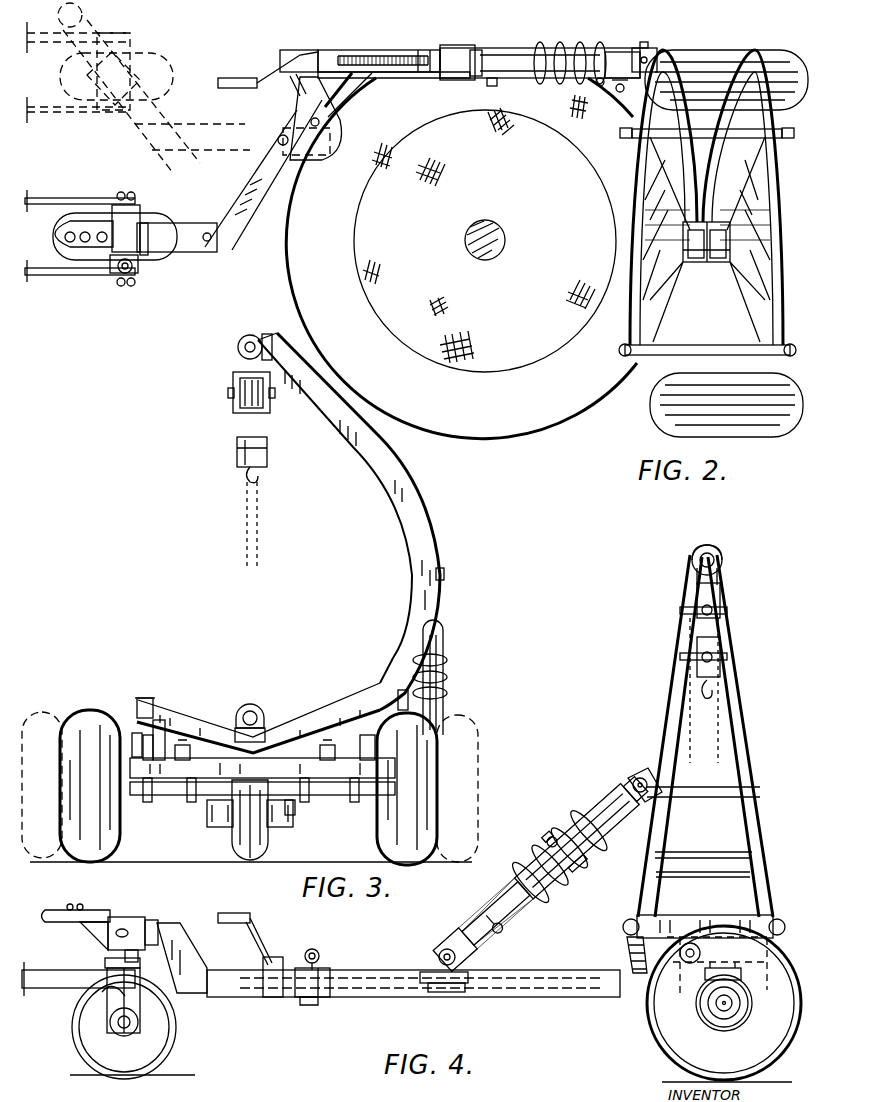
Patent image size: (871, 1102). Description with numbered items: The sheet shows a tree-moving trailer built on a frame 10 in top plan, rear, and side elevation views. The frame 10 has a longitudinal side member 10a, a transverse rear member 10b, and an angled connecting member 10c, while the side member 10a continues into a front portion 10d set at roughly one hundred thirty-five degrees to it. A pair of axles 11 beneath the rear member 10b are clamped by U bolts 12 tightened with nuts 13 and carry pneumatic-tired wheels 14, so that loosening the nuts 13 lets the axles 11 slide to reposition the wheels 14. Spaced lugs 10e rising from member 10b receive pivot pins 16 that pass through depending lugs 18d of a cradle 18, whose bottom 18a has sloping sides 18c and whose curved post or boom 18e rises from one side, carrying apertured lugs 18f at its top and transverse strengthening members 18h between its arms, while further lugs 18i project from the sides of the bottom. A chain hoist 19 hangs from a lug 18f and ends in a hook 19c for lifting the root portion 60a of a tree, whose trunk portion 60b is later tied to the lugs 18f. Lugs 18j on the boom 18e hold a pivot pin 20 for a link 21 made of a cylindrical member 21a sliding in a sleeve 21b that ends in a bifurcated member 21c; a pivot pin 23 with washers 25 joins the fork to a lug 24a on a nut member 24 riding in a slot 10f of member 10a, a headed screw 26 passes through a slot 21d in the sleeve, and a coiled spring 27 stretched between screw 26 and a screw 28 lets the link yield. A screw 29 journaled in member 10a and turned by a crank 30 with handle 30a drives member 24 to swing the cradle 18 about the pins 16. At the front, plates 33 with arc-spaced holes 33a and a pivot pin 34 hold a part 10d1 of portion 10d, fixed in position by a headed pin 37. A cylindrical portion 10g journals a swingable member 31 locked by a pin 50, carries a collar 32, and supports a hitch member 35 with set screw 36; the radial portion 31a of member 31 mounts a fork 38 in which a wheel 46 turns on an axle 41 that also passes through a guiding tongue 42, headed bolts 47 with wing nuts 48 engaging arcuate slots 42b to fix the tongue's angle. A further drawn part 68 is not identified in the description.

In FIG. 4, the frame 10 is at (226, 997).
In FIG. 2, the side member 10a is at (372, 44).
In FIG. 3, the rear member 10b is at (330, 758).
In FIG. 2, the connecting member 10c is at (618, 93).
In FIG. 2, the front portion 10d is at (350, 80).
In FIG. 2, the pivoted part of front portion 10d1 is at (243, 196).
In FIG. 3, the spaced lugs 10e is at (136, 733).
In FIG. 4, the spaced lugs 10e is at (630, 955).
In FIG. 2, the slot 10f is at (416, 52).
In FIG. 2, the cylindrical pivot portion 10g is at (188, 262).
In FIG. 4, the cylindrical pivot portion 10g is at (160, 923).
In FIG. 3, the axles 11 is at (160, 795).
In FIG. 4, the axles 11 is at (735, 1007).
In FIG. 3, the U bolts 12 is at (147, 802).
In FIG. 4, the U bolts 12 is at (753, 994).
In FIG. 3, the nuts 13 is at (182, 745).
In FIG. 2, the wheels 14 is at (780, 102).
In FIG. 3, the wheels 14 is at (58, 712).
In FIG. 4, the wheels 14 is at (662, 1007).
In FIG. 3, the pivot pins 16 is at (132, 735).
In FIG. 4, the pivot pins 16 is at (691, 943).
In FIG. 2, the cradle 18 is at (620, 226).
In FIG. 3, the cradle 18 is at (293, 707).
In FIG. 2, the cradle bottom 18a is at (645, 342).
In FIG. 2, the sloping sides 18c is at (650, 172).
In FIG. 3, the depending lugs 18d is at (160, 720).
In FIG. 4, the depending lugs 18d is at (703, 946).
In FIG. 2, the post or boom 18e is at (775, 290).
In FIG. 3, the post or boom 18e is at (441, 513).
In FIG. 4, the post or boom 18e is at (738, 730).
In FIG. 2, the apertured lugs 18f is at (731, 240).
In FIG. 3, the apertured lugs 18f is at (245, 345).
In FIG. 4, the apertured lugs 18f is at (745, 533).
In FIG. 4, the transverse strengthening members 18h is at (705, 858).
In FIG. 2, the side lugs 18i is at (627, 140).
In FIG. 3, the side lugs 18i is at (152, 697).
In FIG. 4, the side lugs 18i is at (622, 928).
In FIG. 4, the spaced lugs 18j is at (648, 772).
In FIG. 3, the chain hoist 19 is at (235, 405).
In FIG. 4, the chain hoist 19 is at (728, 612).
In FIG. 3, the hook 19c is at (262, 474).
In FIG. 4, the hook 19c is at (697, 688).
In FIG. 2, the pivot pin 20 is at (646, 50).
In FIG. 3, the pivot pin 20 is at (444, 573).
In FIG. 4, the pivot pin 20 is at (637, 782).
In FIG. 2, the link 21 is at (545, 87).
In FIG. 3, the link 21 is at (445, 710).
In FIG. 4, the link 21 is at (520, 855).
In FIG. 2, the link member 21a is at (606, 80).
In FIG. 4, the link member 21a is at (608, 814).
In FIG. 4, the cylindrical sleeve 21b is at (578, 838).
In FIG. 4, the bifurcated member 21c is at (463, 932).
In FIG. 4, the longitudinal slot 21d is at (576, 856).
In FIG. 2, the pivot pin 23 is at (498, 32).
In FIG. 4, the pivot pin 23 is at (438, 953).
In FIG. 4, the nut member 24 is at (431, 993).
In FIG. 4, the lug 24a is at (465, 973).
In FIG. 2, the washers 25 is at (453, 78).
In FIG. 2, the headed screw 26 is at (599, 87).
In FIG. 4, the headed screw 26 is at (571, 862).
In FIG. 2, the tensile coiled spring 27 is at (566, 52).
In FIG. 3, the tensile coiled spring 27 is at (447, 657).
In FIG. 4, the tensile coiled spring 27 is at (545, 894).
In FIG. 2, the screw 28 is at (492, 86).
In FIG. 4, the screw 28 is at (504, 922).
In FIG. 2, the screw 29 is at (385, 74).
In FIG. 4, the screw 29 is at (366, 991).
In FIG. 2, the crank 30 is at (306, 52).
In FIG. 4, the crank 30 is at (263, 939).
In FIG. 2, the handle portion 30a is at (250, 89).
In FIG. 4, the handle portion 30a is at (230, 913).
In FIG. 2, the swingable member 31 is at (148, 212).
In FIG. 4, the swingable member 31 is at (128, 917).
In FIG. 4, the radial portion 31a is at (122, 955).
In FIG. 4, the collar 32 is at (152, 920).
In FIG. 2, the plates 33 is at (342, 145).
In FIG. 4, the plates 33 is at (332, 970).
In FIG. 2, the holes 33a is at (308, 121).
In FIG. 2, the pivot bolt or pin 34 is at (277, 140).
In FIG. 4, the pivot bolt or pin 34 is at (265, 960).
In FIG. 2, the hitch member 35 is at (60, 231).
In FIG. 4, the hitch member 35 is at (45, 910).
In FIG. 4, the set screw 36 is at (72, 904).
In FIG. 2, the headed pin 37 is at (292, 84).
In FIG. 4, the headed pin 37 is at (320, 952).
In FIG. 4, the fork 38 is at (138, 962).
In FIG. 3, the axle member 41 is at (290, 816).
In FIG. 4, the axle member 41 is at (127, 1030).
In FIG. 2, the guiding tongue 42 is at (80, 200).
In FIG. 4, the guiding tongue 42 is at (33, 989).
In FIG. 4, the arcuate slots 42b is at (102, 1003).
In FIG. 2, the wheel 46 is at (168, 58).
In FIG. 3, the wheel 46 is at (232, 838).
In FIG. 4, the wheel 46 is at (160, 1036).
In FIG. 4, the headed bolts 47 is at (136, 990).
In FIG. 2, the wing nuts 48 is at (130, 190).
In FIG. 2, the pin 50 is at (133, 270).
In FIG. 4, the pin 50 is at (120, 928).
In FIG. 2, the root portion 60a is at (547, 348).
In FIG. 2, the trunk portion 60b is at (500, 228).
In FIG. 2, the rim ring 68 is at (532, 432).